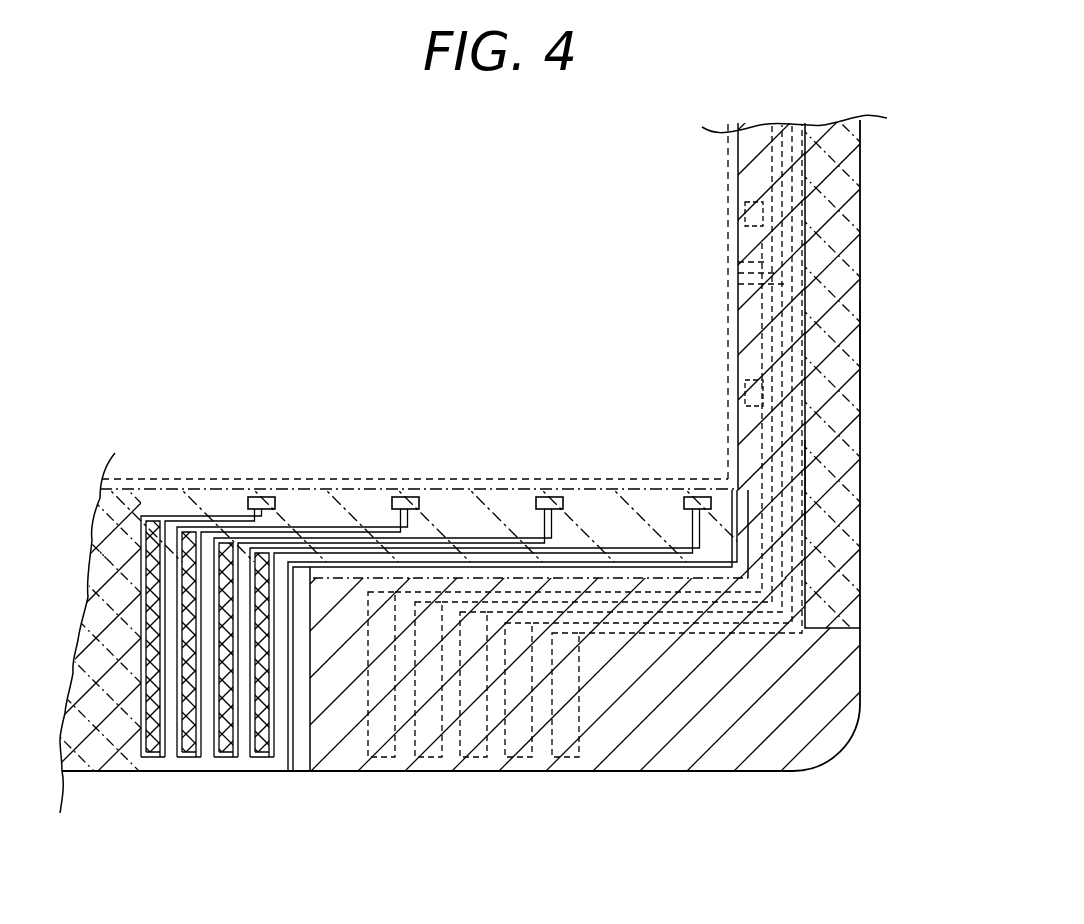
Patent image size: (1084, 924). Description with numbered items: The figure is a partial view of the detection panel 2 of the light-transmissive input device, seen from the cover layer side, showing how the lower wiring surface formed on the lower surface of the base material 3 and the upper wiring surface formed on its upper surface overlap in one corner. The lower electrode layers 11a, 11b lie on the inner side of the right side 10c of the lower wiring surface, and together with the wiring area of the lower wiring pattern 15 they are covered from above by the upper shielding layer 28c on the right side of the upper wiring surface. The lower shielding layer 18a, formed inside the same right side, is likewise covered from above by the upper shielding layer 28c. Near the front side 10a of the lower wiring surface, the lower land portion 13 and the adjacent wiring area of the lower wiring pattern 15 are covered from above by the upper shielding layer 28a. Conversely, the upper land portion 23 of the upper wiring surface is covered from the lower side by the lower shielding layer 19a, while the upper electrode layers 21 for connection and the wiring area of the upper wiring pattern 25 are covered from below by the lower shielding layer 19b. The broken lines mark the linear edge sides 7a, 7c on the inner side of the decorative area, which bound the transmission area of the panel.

The detection panel 2 is at (482, 228).
The base material 3 is at (742, 776).
The edge side 7a is at (205, 478).
The edge side 7c is at (720, 168).
The side 10a is at (98, 772).
The side 10c is at (860, 392).
The lower electrode layer 11a is at (745, 212).
The lower electrode layer 11b is at (745, 390).
The lower land portion 13 is at (563, 759).
The lower wiring pattern 15 is at (737, 283).
The lower shielding layer 18a is at (843, 474).
The lower shielding layer 19a is at (302, 742).
The lower shielding layer 19b is at (598, 490).
The upper electrode layer 21 is at (258, 497).
The upper land portion 23 is at (262, 757).
The upper wiring pattern 25 is at (354, 530).
The upper shielding layer 28a is at (648, 758).
The upper shielding layer 28c is at (848, 232).